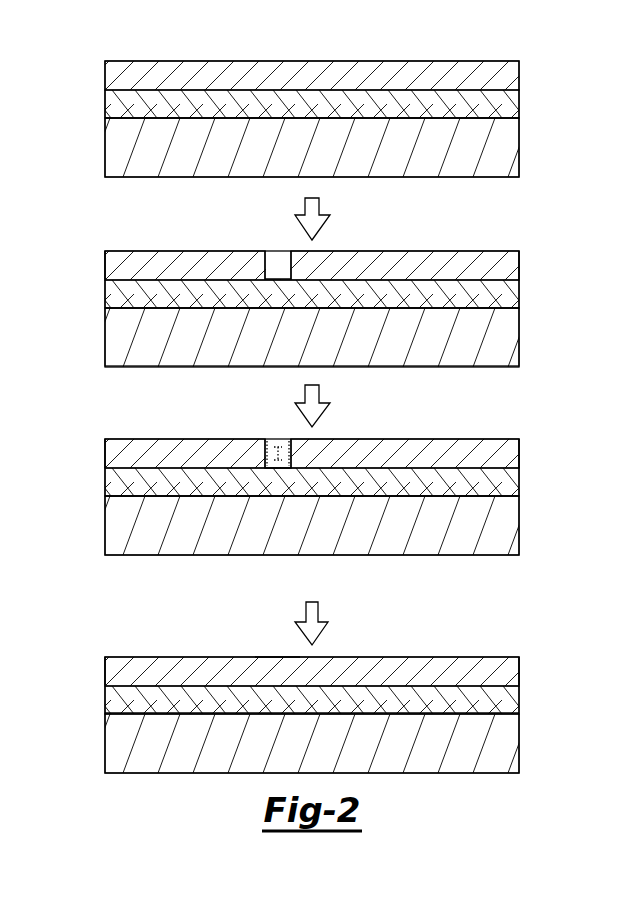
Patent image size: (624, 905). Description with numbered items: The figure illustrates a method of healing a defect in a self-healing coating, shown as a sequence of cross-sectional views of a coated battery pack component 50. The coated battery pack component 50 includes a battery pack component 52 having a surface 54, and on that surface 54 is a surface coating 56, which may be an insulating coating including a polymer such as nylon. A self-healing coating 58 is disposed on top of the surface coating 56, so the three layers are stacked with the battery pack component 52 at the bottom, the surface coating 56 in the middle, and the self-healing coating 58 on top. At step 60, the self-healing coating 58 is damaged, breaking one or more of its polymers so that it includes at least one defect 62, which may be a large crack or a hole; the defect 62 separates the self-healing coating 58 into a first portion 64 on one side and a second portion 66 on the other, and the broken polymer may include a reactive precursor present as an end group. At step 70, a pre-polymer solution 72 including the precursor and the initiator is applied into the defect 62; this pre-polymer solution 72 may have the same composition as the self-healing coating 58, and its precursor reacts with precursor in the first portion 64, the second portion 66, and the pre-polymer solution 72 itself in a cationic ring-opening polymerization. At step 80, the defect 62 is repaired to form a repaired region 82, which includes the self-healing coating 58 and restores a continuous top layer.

The coated battery pack component 50 is at (536, 69).
The battery pack component 52 is at (112, 152).
The surface 54 is at (486, 107).
The surface coating 56 is at (112, 107).
The self-healing coating 58 is at (112, 79).
The step 60 is at (321, 200).
The defect 62 is at (278, 272).
The first portion 64 is at (115, 242).
The second portion 66 is at (469, 243).
The step 70 is at (321, 397).
The pre-polymer solution 72 is at (275, 447).
The step 80 is at (320, 612).
The repaired region 82 is at (274, 648).